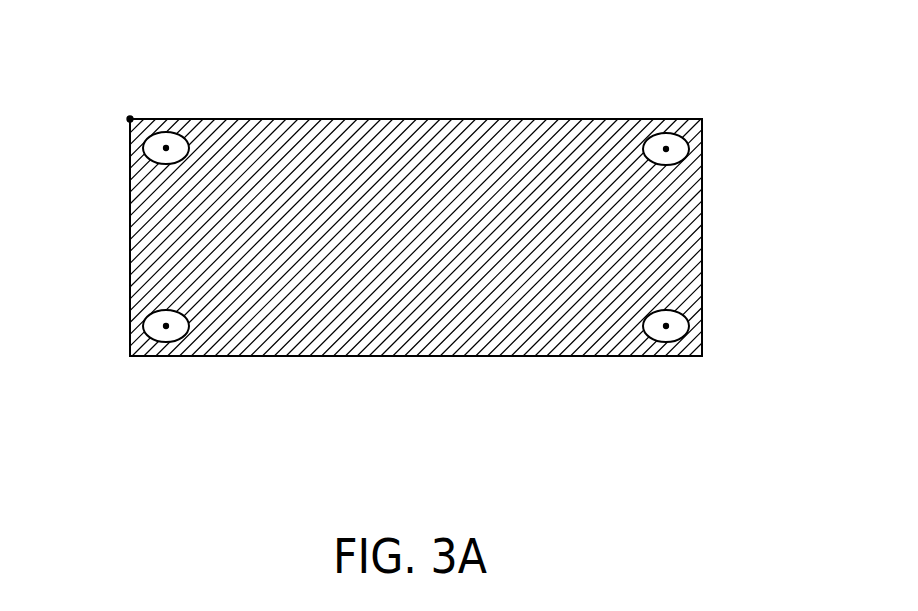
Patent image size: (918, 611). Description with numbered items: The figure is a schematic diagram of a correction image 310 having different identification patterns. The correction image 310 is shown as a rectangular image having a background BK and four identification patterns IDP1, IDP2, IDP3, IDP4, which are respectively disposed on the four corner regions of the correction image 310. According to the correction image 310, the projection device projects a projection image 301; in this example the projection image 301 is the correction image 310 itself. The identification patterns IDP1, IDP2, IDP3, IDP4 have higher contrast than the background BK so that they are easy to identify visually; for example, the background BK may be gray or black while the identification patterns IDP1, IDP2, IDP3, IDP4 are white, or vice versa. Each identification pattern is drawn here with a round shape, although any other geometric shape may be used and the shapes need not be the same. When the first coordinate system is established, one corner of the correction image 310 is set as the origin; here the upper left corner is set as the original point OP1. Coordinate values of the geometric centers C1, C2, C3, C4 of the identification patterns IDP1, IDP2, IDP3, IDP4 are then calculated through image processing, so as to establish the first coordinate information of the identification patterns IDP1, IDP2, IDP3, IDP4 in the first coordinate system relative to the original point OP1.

The correction image 310 is at (416, 190).
The background BK is at (383, 145).
The original point OP1 is at (128, 118).
The geometric center C1 is at (166, 146).
The geometric center C2 is at (666, 147).
The geometric center C3 is at (167, 342).
The geometric center C4 is at (666, 342).
The identification pattern IDP1 is at (189, 138).
The identification pattern IDP2 is at (644, 138).
The identification pattern IDP3 is at (187, 337).
The identification pattern IDP4 is at (643, 338).
The projection image 301 is at (790, 484).